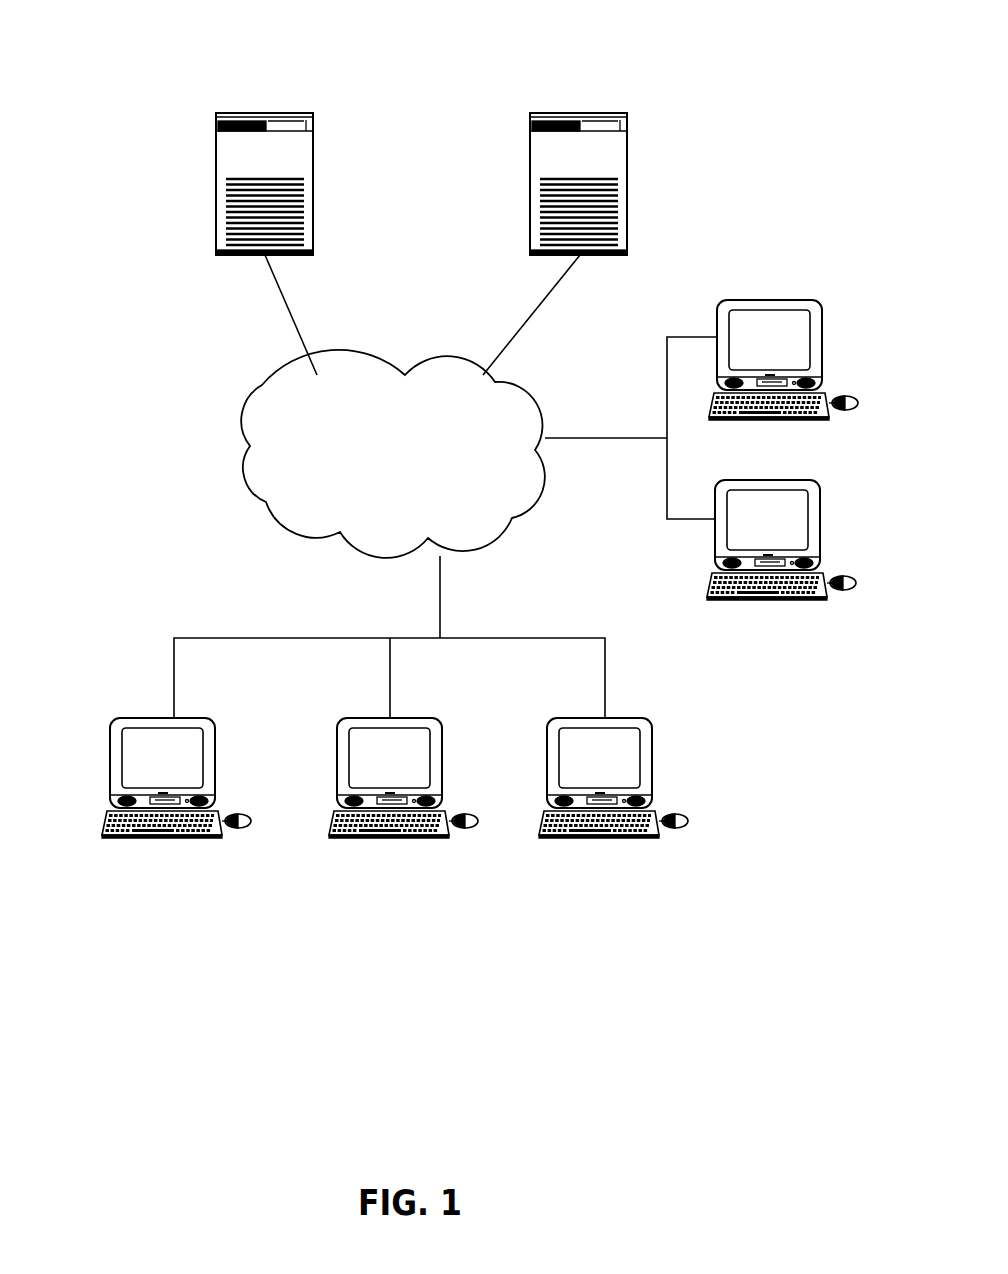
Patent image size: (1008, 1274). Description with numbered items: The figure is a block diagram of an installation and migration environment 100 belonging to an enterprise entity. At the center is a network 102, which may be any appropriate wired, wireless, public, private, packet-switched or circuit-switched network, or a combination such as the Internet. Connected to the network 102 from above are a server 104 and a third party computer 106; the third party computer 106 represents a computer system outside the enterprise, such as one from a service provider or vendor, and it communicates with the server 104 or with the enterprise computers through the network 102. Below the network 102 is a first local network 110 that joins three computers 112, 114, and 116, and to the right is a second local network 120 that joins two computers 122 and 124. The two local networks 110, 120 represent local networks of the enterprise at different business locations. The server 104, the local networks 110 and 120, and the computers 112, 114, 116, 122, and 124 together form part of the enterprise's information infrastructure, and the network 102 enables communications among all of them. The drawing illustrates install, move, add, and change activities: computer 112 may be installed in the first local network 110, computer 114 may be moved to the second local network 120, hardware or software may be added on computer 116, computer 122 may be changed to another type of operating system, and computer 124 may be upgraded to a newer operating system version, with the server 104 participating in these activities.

The installation and migration environment 100 is at (105, 107).
The network 102 is at (413, 448).
The server 104 is at (622, 140).
The third party computer 106 is at (309, 131).
The first local network 110 is at (336, 659).
The computer 112 is at (176, 823).
The computer 114 is at (403, 823).
The computer 116 is at (613, 823).
The second local network 120 is at (649, 416).
The computer 122 is at (798, 319).
The computer 124 is at (798, 512).